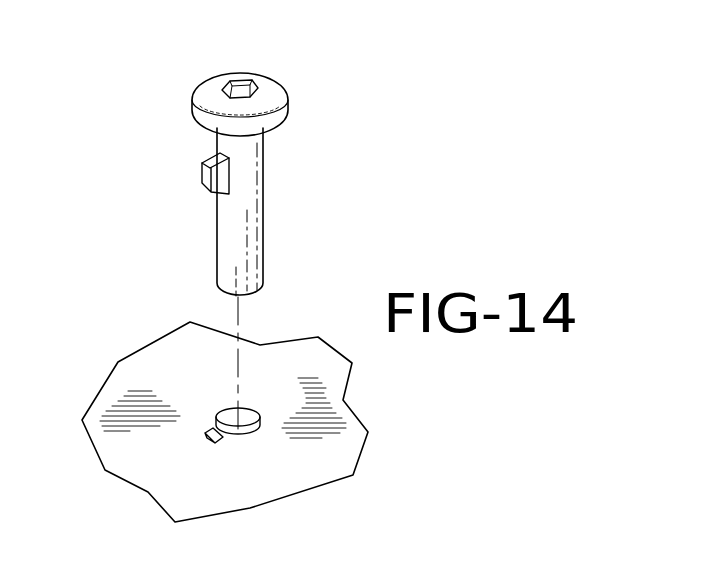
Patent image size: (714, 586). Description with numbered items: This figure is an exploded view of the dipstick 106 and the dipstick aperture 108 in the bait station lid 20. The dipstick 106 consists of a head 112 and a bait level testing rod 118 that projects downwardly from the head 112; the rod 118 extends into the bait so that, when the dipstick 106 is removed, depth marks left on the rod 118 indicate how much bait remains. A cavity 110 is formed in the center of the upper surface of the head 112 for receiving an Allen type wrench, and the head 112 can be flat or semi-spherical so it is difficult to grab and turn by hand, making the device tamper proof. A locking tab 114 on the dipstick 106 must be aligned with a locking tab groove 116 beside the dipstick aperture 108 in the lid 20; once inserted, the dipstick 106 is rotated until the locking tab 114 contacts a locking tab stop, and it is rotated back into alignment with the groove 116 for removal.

The bait station lid 20 is at (272, 488).
The dipstick 106 is at (260, 199).
The dipstick aperture 108 is at (227, 410).
The cavity 110 is at (238, 90).
The head 112 is at (208, 97).
The locking tab 114 is at (203, 177).
The locking tab groove 116 is at (212, 442).
The bait level testing rod 118 is at (227, 246).